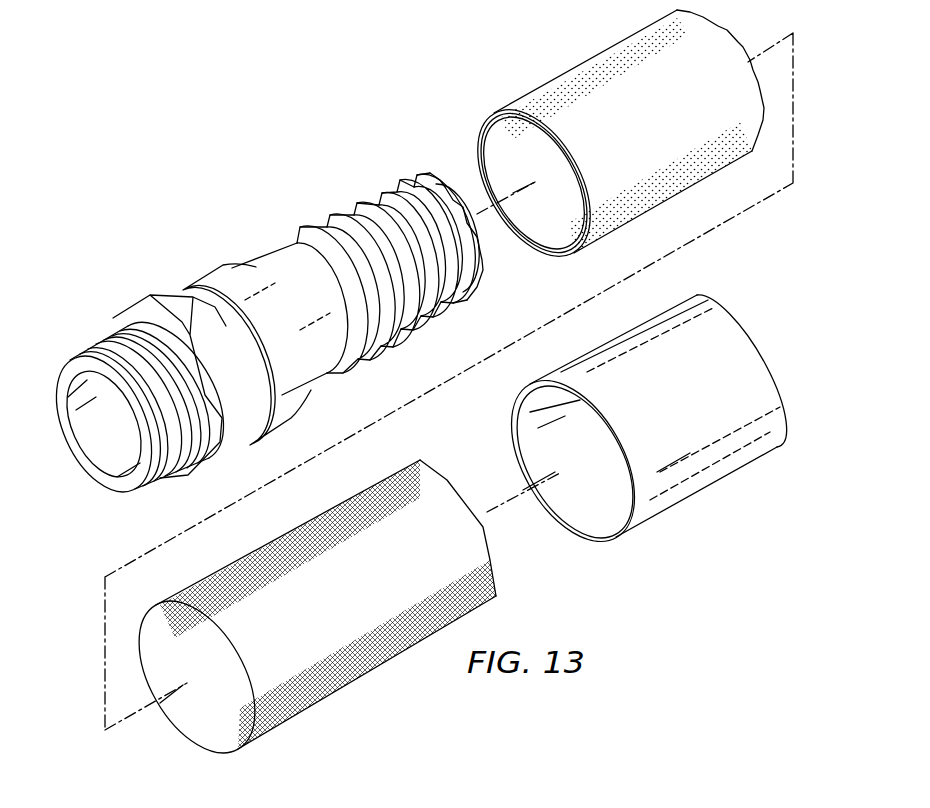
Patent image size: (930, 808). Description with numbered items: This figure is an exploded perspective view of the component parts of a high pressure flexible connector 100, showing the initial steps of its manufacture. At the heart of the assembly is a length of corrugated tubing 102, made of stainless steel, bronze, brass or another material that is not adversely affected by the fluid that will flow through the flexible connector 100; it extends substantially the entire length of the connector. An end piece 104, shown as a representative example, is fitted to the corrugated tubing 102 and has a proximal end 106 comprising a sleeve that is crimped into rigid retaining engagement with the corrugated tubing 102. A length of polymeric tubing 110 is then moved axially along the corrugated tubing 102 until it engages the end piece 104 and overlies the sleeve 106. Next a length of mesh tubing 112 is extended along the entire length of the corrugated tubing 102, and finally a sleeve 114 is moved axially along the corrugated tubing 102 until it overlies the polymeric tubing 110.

The flexible connector 100 is at (415, 391).
The length of corrugated tubing 102 is at (340, 210).
The end piece 104 is at (137, 298).
The proximal end 106 is at (222, 272).
The length of polymeric tubing 110 is at (578, 68).
The length of mesh tubing 112 is at (343, 693).
The sleeve 114 is at (702, 497).